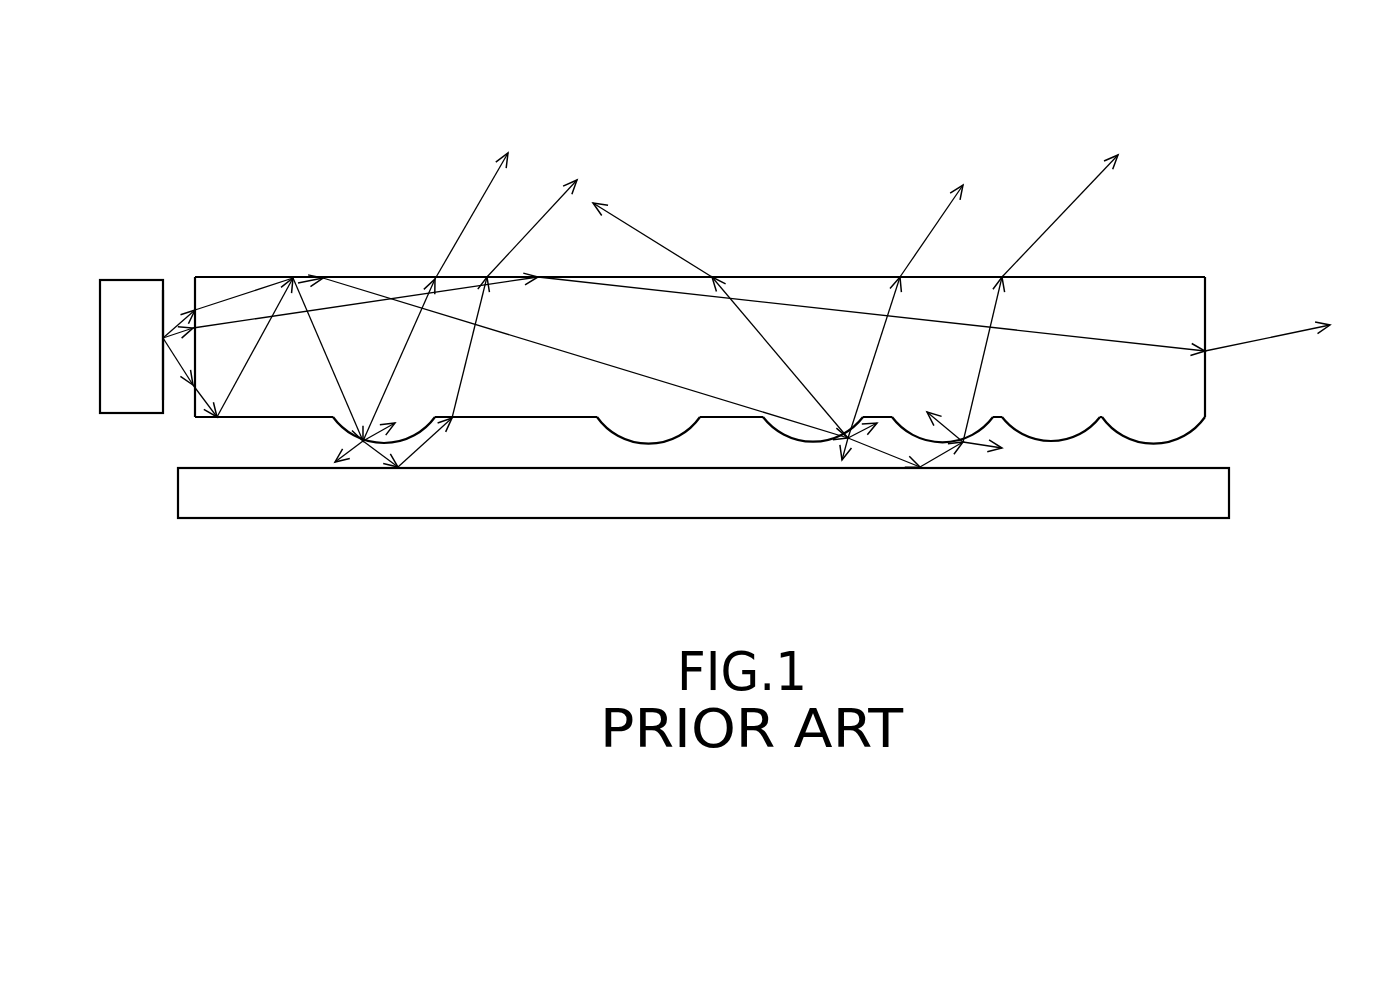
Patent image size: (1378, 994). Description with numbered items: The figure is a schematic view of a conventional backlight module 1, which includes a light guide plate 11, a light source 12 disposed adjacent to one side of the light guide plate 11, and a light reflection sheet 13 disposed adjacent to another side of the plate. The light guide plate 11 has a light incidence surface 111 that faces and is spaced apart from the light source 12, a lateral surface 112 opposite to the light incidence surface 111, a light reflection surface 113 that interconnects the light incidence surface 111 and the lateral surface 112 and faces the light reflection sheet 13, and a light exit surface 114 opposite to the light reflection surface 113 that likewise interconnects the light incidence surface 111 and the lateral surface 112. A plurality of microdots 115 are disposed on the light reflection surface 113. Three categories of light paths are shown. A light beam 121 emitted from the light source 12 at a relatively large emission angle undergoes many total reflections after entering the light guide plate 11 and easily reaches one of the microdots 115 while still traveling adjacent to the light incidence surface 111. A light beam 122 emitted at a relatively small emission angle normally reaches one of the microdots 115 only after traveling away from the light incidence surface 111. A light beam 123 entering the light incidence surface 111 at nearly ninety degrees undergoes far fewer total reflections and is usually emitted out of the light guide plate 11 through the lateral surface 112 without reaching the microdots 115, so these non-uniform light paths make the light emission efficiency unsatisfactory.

The backlight module 1 is at (222, 132).
The light guide plate 11 is at (1197, 257).
The light incidence surface 111 is at (195, 292).
The lateral surface 112 is at (1205, 312).
The light reflection surface 113 is at (507, 420).
The light exit surface 114 is at (258, 278).
The microdots 115 is at (338, 430).
The light source 12 is at (115, 280).
The light beam 121 is at (178, 378).
The light beam 122 is at (180, 318).
The light beam 123 is at (163, 338).
The light reflection sheet 13 is at (1229, 491).